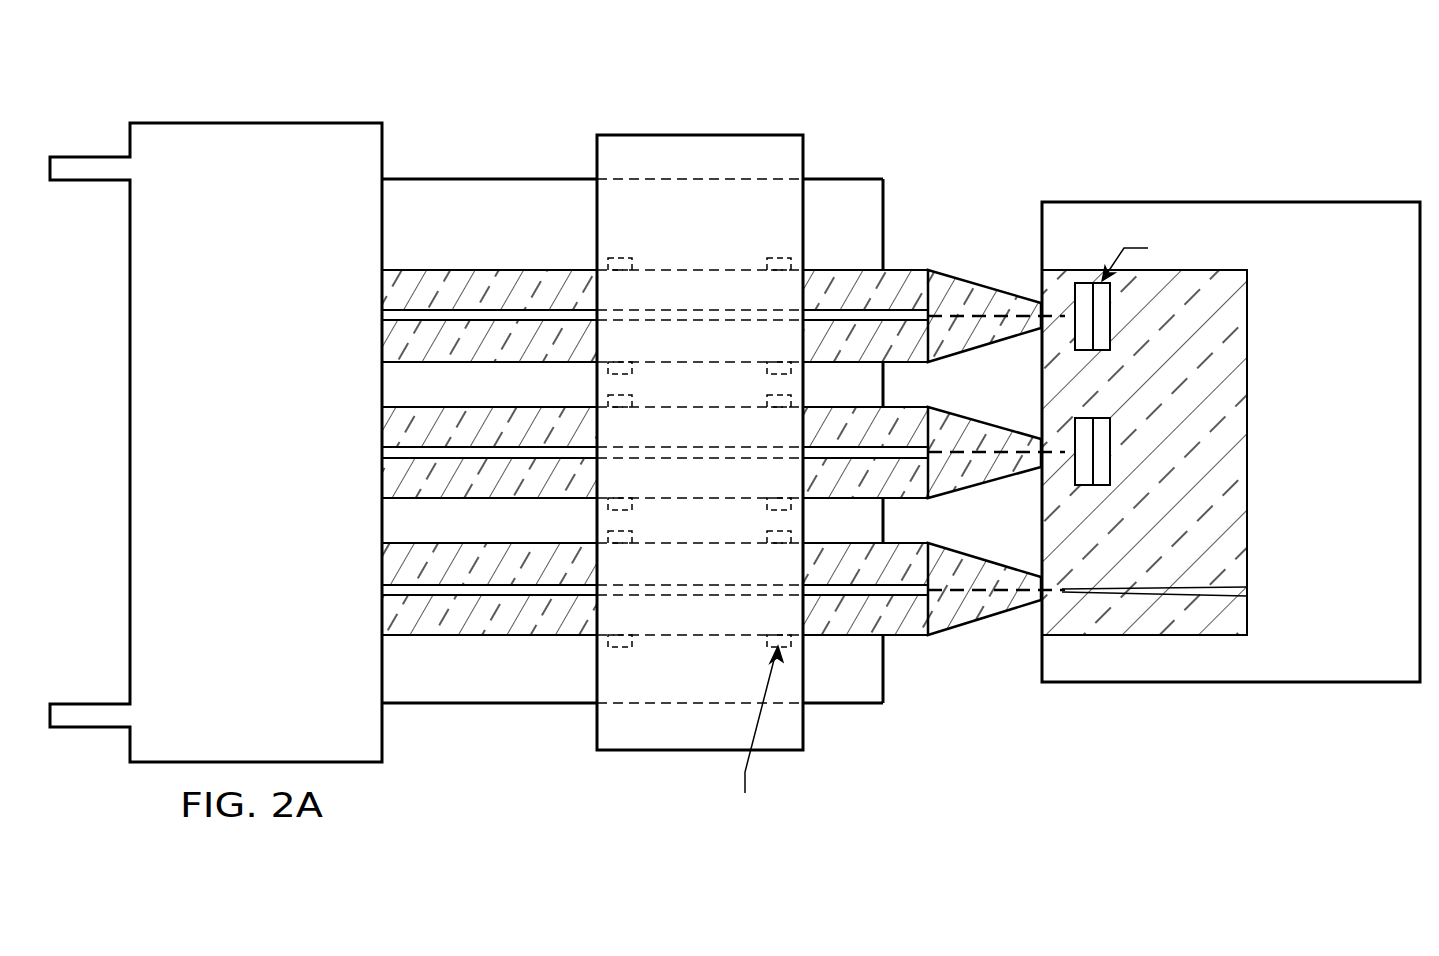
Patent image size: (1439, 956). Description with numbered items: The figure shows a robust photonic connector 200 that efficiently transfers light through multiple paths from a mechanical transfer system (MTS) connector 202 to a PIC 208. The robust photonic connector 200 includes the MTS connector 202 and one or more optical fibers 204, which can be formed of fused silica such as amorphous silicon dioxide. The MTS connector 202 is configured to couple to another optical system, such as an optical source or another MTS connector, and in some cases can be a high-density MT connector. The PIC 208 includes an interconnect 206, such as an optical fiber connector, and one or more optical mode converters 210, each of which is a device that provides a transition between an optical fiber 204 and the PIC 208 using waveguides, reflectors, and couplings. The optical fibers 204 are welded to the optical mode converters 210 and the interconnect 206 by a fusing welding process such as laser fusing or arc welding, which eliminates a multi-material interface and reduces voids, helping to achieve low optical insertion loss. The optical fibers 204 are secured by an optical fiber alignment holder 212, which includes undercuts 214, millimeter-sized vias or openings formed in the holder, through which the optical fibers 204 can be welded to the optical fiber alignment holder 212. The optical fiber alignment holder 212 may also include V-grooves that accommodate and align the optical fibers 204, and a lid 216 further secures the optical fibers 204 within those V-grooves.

The robust photonic connector 200 is at (1144, 111).
The mechanical transfer system (MTS) connector 202 is at (233, 473).
The optical fiber 204 is at (907, 636).
The interconnect 206 is at (1038, 193).
The PIC 208 is at (1310, 474).
The optical mode converter 210 is at (988, 617).
The optical fiber alignment holder 212 is at (488, 188).
The undercut 214 is at (779, 258).
The lid 216 is at (700, 134).